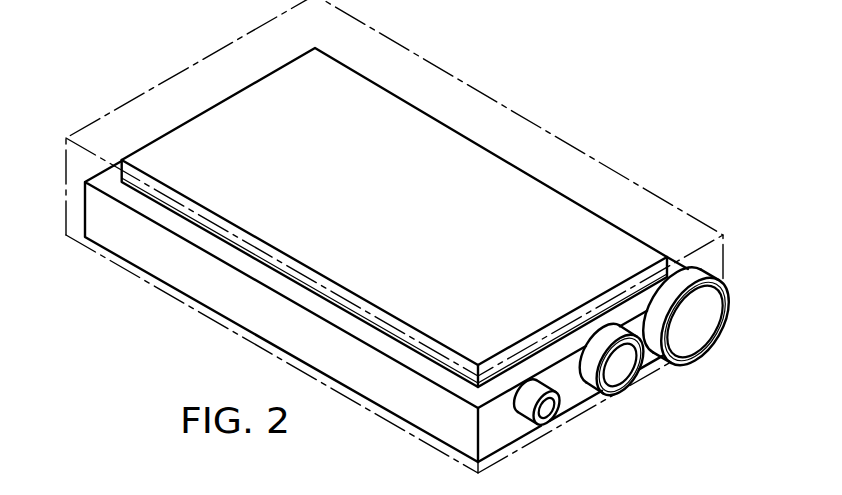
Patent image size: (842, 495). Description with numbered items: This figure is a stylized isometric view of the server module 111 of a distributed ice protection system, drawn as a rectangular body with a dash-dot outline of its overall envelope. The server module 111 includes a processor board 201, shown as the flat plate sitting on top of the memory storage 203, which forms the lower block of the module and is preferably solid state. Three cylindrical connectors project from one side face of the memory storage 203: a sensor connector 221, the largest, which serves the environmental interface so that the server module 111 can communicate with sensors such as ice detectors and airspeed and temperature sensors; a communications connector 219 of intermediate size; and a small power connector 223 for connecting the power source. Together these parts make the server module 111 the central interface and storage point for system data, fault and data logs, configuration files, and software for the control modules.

The server module 111 is at (594, 80).
The processor board 201 is at (415, 224).
The memory storage 203 is at (232, 311).
The communications connector 219 is at (620, 365).
The sensor connector 221 is at (697, 320).
The power connector 223 is at (547, 410).